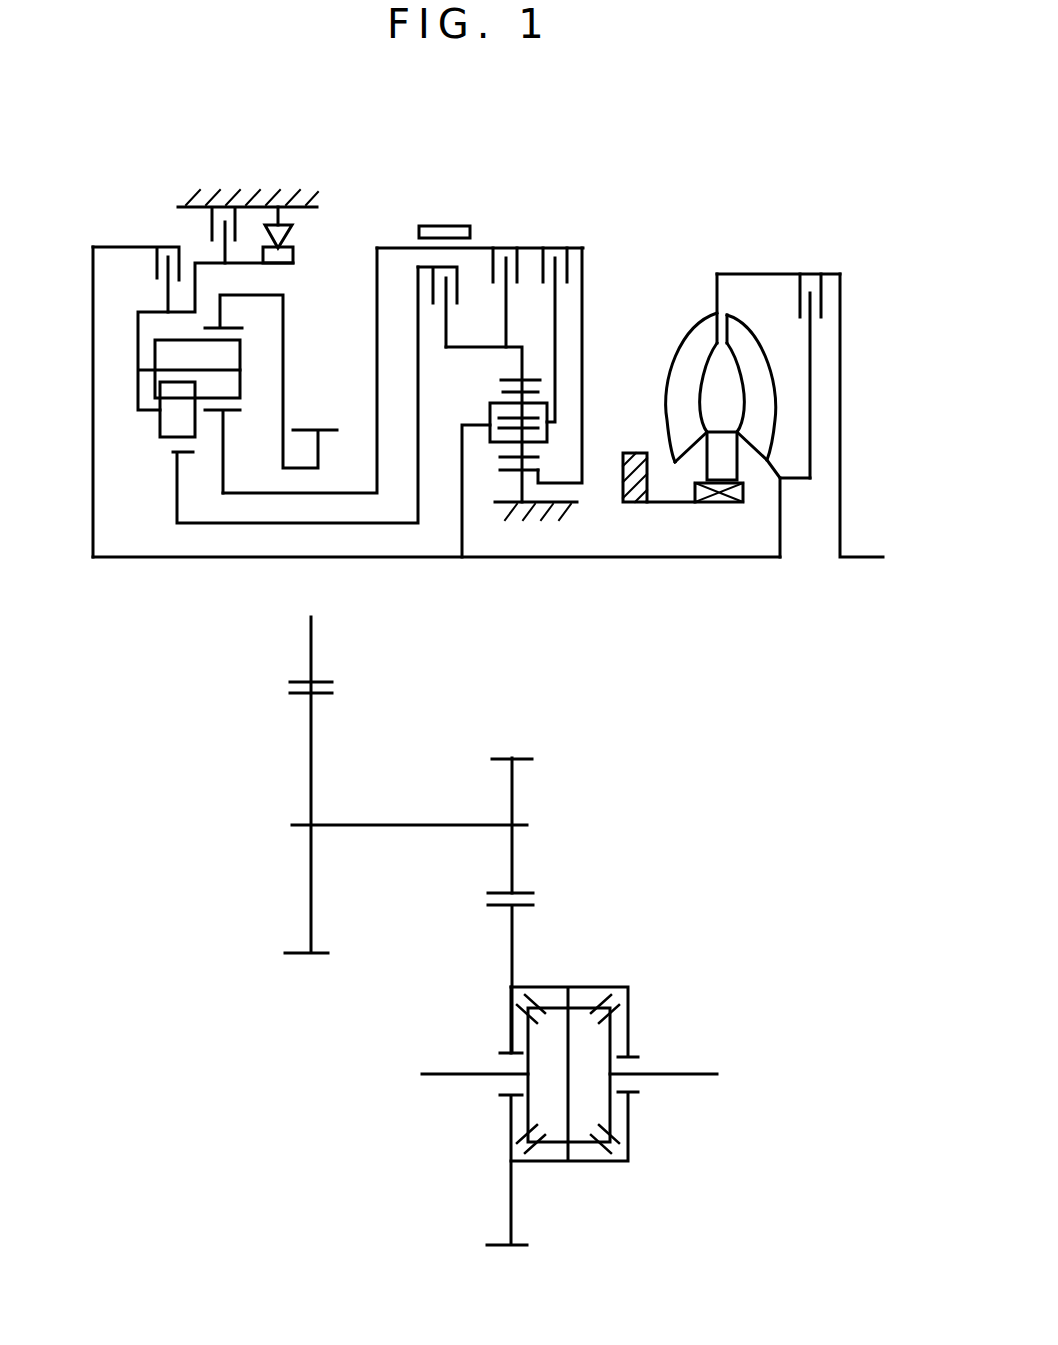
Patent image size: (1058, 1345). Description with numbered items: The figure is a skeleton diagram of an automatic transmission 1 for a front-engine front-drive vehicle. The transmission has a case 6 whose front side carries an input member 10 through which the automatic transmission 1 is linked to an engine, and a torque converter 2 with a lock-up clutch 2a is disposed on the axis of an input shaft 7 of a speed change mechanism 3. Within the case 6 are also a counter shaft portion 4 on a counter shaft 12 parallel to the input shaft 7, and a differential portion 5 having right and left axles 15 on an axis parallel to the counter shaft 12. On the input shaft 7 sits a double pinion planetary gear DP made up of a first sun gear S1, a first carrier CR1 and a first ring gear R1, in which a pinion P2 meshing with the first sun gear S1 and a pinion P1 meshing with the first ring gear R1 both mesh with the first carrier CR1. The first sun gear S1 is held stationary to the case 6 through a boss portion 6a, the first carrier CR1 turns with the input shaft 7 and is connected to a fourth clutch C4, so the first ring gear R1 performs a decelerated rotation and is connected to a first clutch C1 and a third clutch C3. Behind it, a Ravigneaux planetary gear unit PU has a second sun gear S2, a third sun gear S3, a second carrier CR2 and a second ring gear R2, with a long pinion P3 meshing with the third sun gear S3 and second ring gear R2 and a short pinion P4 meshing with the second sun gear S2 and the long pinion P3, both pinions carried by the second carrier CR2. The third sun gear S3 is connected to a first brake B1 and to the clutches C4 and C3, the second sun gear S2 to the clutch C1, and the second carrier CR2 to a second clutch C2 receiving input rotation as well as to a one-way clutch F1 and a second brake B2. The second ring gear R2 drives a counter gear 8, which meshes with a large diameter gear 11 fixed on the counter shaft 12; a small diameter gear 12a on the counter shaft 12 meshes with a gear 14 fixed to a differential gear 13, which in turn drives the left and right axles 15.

The automatic transmission 1 is at (653, 172).
The torque converter 2 is at (729, 260).
The lock-up clutch 2a is at (823, 305).
The speed change mechanism 3 is at (373, 190).
The counter shaft portion 4 is at (283, 800).
The differential portion 5 is at (660, 972).
The case 6 is at (183, 200).
The boss portion 6a is at (563, 517).
The input shaft 7 is at (560, 560).
The counter gear 8 is at (327, 430).
The input member 10 is at (857, 555).
The large diameter gear 11 is at (312, 735).
The counter shaft 12 is at (402, 827).
The small diameter gear 12a is at (513, 783).
The differential gear 13 is at (595, 1162).
The gear 14 is at (513, 935).
The axles 15 is at (447, 1075).
The planetary gear unit PU is at (235, 356).
The planetary gear DP is at (534, 393).
The first carrier CR1 is at (547, 435).
The second carrier CR2 is at (137, 327).
The first ring gear R1 is at (517, 376).
The second ring gear R2 is at (240, 326).
The first sun gear S1 is at (505, 486).
The second sun gear S2 is at (175, 455).
The third sun gear S3 is at (225, 412).
The pinion P1 is at (510, 393).
The pinion P2 is at (503, 455).
The long pinion P3 is at (245, 362).
The short pinion P4 is at (160, 423).
The first clutch C1 is at (460, 307).
The second clutch C2 is at (140, 264).
The third clutch C3 is at (509, 282).
The fourth clutch C4 is at (558, 320).
The first brake B1 is at (444, 216).
The second brake B2 is at (248, 209).
The one-way clutch F1 is at (281, 209).